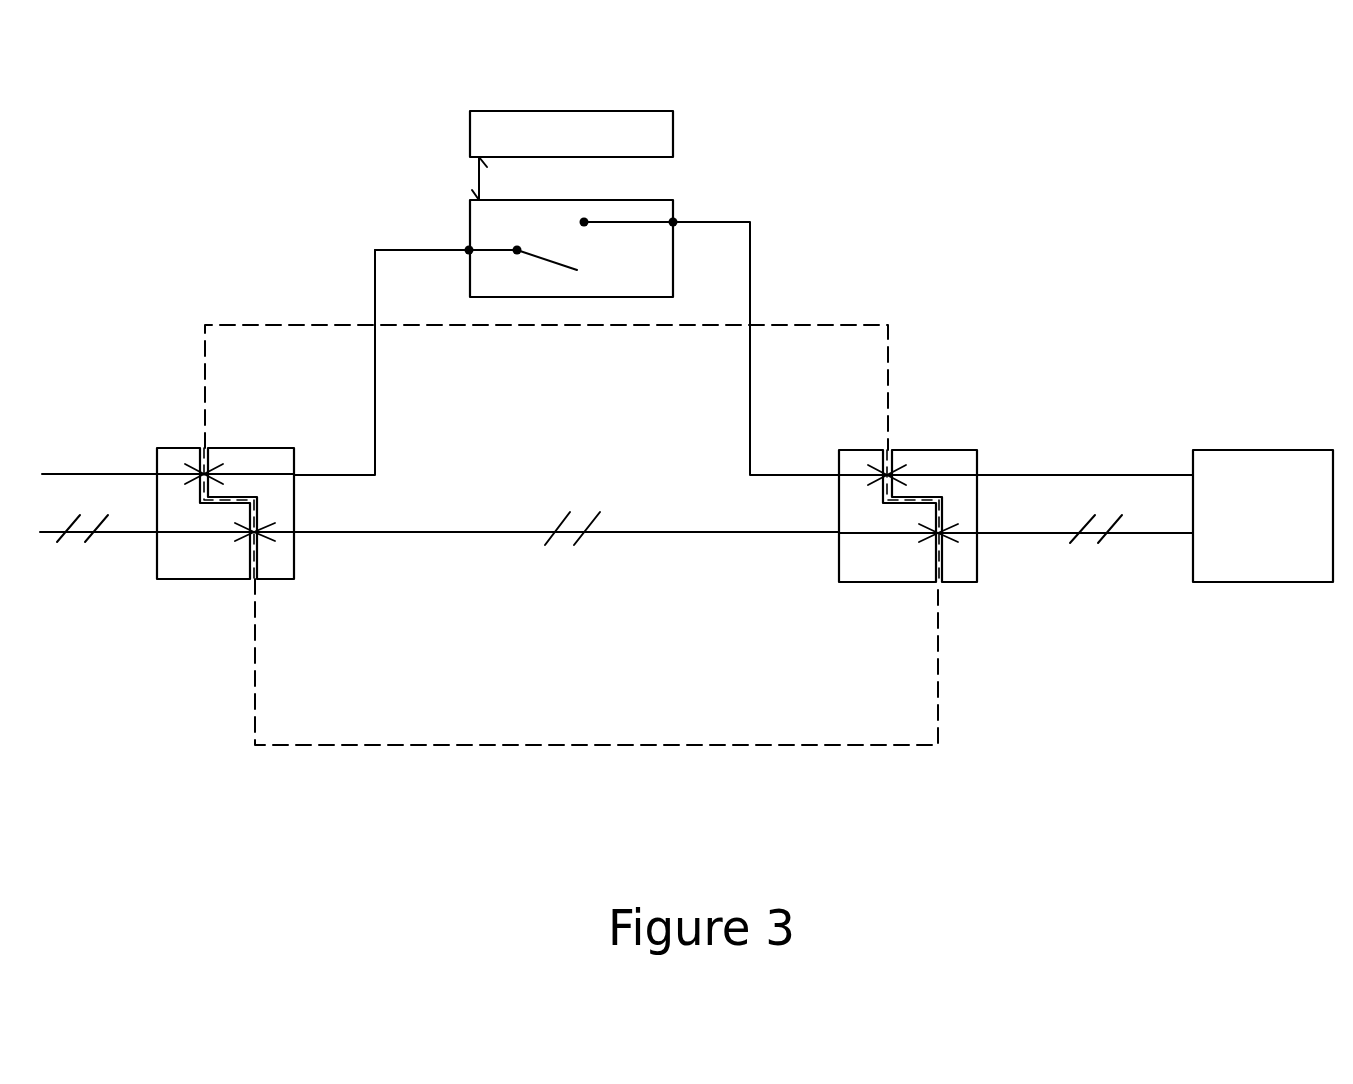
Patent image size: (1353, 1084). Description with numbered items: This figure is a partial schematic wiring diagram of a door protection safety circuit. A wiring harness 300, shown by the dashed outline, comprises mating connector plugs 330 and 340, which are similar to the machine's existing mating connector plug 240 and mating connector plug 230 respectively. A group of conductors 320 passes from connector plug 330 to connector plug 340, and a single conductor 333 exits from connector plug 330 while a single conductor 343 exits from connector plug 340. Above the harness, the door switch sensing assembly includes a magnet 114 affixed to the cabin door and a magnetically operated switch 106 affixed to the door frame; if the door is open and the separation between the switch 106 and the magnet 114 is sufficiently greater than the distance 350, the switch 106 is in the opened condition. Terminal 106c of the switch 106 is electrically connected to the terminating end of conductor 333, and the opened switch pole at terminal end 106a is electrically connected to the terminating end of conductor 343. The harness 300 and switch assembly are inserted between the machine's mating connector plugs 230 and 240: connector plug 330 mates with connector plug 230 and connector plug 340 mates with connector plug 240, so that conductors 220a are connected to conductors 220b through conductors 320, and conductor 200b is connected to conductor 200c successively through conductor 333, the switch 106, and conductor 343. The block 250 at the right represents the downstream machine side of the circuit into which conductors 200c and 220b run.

The magnet 114 is at (675, 132).
The magnetically operated switch 106 is at (675, 208).
The conductor terminating terminal 106a is at (584, 222).
The conductor terminating terminal 106c is at (469, 250).
The distance 350 is at (479, 178).
The single conductor 333 is at (375, 444).
The single conductor 343 is at (750, 434).
The conductor 200b is at (102, 472).
The conductor 200c is at (1085, 475).
The conductors 220a is at (123, 533).
The conductors 220b is at (1115, 535).
The mating connector plug 230 is at (203, 557).
The mating connector plug 240 is at (937, 475).
The connector plug 330 is at (275, 568).
The connector plug 340 is at (888, 570).
The group of conductors 320 is at (584, 533).
The network node 250 is at (1263, 448).
The wiring harness 300 is at (618, 745).